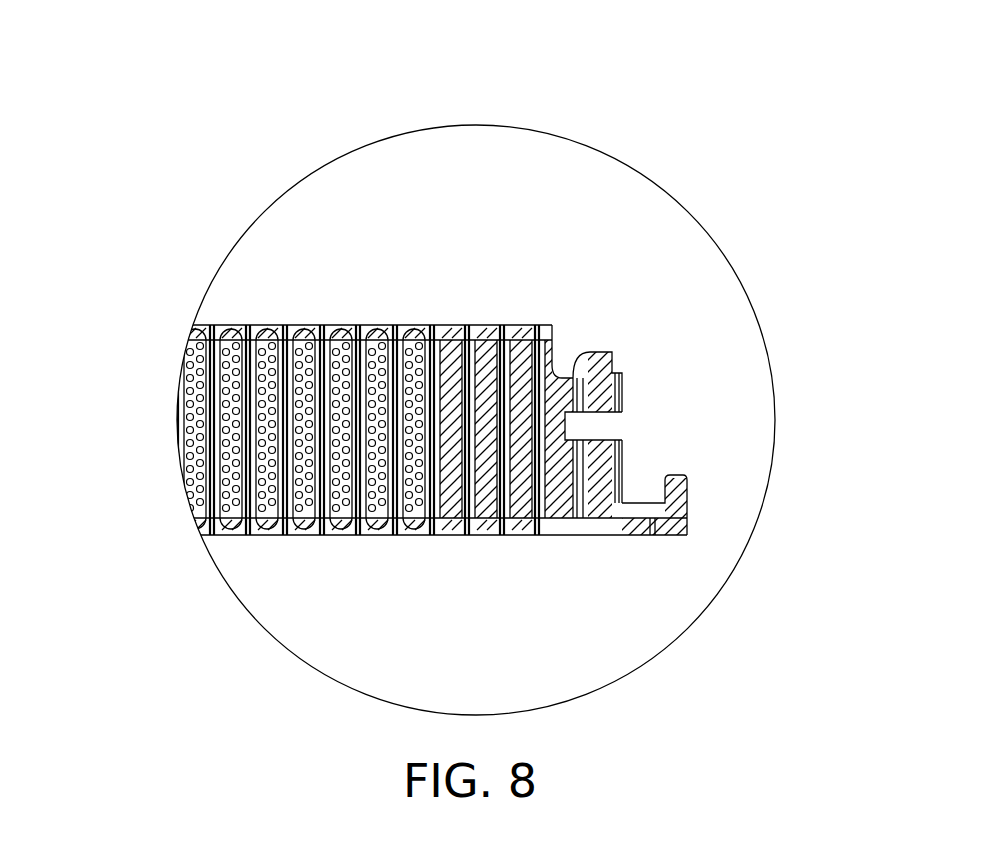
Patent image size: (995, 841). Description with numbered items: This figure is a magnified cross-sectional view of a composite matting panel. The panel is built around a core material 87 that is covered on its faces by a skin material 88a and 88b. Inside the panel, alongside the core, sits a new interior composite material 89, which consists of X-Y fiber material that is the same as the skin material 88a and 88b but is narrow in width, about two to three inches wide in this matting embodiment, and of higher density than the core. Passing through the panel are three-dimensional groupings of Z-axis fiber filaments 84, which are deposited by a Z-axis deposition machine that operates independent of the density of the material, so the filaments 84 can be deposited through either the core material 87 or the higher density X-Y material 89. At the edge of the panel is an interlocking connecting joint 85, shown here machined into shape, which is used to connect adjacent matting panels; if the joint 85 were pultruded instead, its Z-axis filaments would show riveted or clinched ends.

The 3-D groupings of Z-axis fiber filaments 84 is at (432, 325).
The interlocking connecting joint 85 is at (620, 392).
The core material 87 is at (238, 325).
The skin material 88a is at (305, 325).
The skin material 88b is at (297, 537).
The interior composite material 89 is at (548, 365).